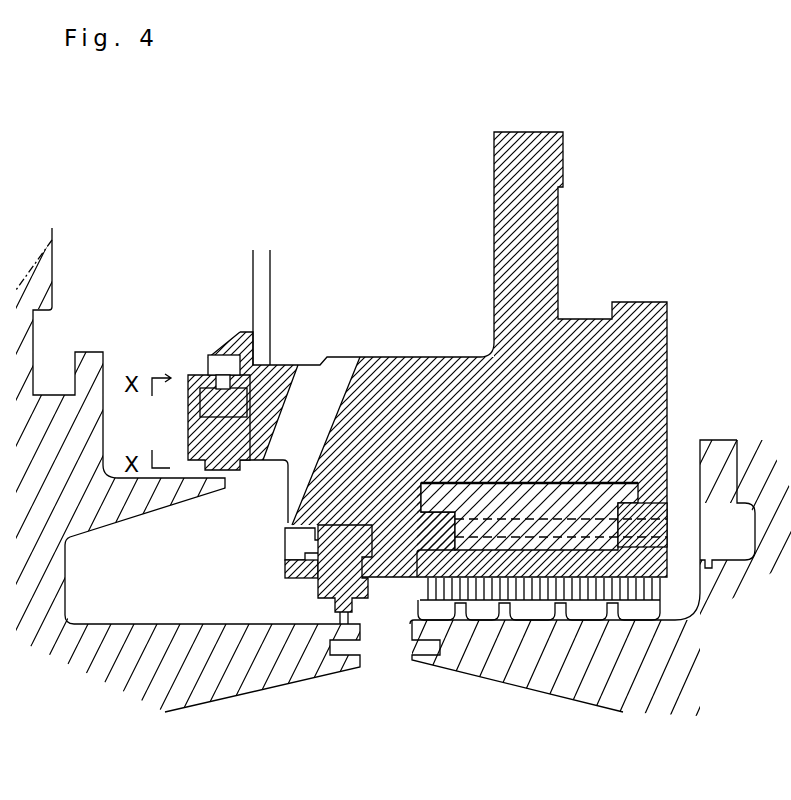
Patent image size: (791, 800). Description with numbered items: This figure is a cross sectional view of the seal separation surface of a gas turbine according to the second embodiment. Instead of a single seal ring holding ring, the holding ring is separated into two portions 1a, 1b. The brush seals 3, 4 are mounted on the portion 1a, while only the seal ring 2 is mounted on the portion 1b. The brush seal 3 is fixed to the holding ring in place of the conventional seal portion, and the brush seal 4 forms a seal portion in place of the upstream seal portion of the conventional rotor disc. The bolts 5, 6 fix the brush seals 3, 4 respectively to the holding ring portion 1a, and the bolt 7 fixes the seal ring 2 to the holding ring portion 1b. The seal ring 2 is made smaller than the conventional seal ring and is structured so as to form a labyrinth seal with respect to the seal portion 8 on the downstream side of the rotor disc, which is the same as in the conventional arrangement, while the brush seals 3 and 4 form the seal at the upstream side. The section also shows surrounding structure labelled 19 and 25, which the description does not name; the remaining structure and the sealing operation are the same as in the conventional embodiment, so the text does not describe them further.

The seal ring holding ring portion 1a is at (300, 362).
The seal ring holding ring portion 1b is at (558, 272).
The seal ring 2 is at (490, 485).
The brush seal 3 is at (190, 376).
The brush seal 4 is at (318, 588).
The bolt 5 is at (215, 353).
The bolt 6 is at (285, 545).
The bolt 7 is at (656, 528).
The seal portion 8 is at (480, 622).
The base block 19 is at (215, 690).
The pin 25 is at (310, 247).